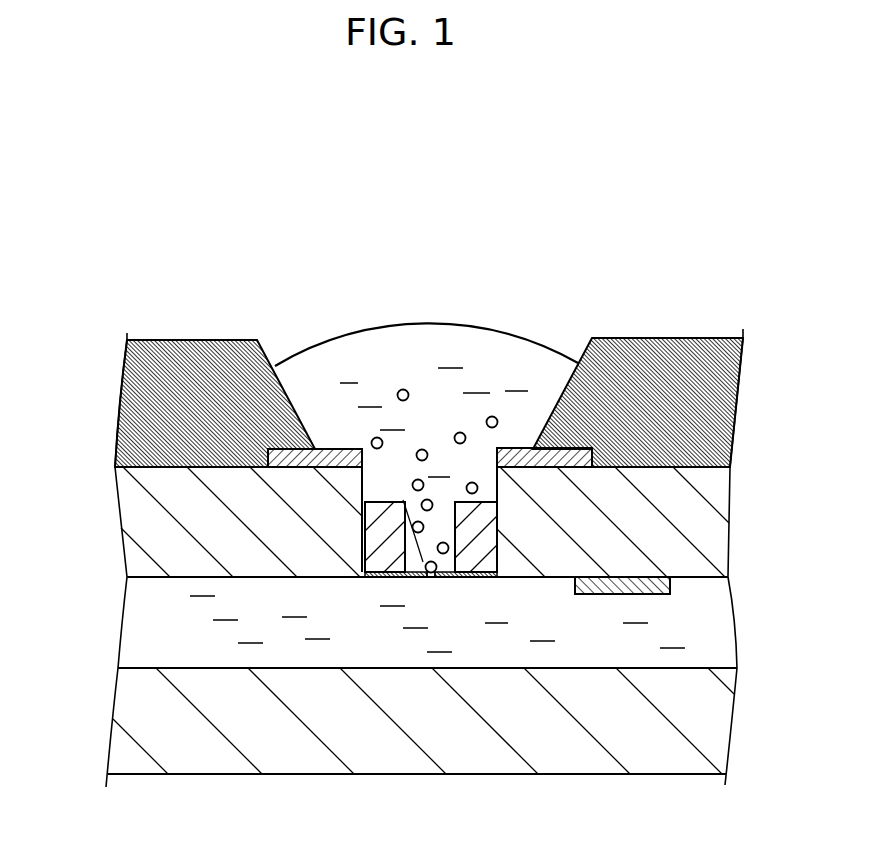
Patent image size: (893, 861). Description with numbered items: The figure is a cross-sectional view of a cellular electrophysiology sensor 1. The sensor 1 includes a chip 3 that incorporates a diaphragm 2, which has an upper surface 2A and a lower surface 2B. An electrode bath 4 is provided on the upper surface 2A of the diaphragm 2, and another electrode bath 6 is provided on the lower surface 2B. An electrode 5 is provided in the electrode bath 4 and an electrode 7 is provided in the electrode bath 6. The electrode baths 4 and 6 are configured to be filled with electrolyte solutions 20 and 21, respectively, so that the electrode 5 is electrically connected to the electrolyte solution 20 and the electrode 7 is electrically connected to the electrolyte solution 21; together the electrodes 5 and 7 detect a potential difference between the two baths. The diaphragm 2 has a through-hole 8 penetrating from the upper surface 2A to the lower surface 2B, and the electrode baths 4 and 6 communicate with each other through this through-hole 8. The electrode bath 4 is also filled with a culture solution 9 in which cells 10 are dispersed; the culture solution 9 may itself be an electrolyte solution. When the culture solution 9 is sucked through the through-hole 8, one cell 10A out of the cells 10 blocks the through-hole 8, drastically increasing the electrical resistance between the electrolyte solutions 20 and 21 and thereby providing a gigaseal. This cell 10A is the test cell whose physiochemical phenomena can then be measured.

The cellular electrophysiology sensor 1 is at (593, 272).
The diaphragm 2 is at (390, 577).
The upper surface 2A is at (403, 500).
The lower surface 2B is at (407, 577).
The chip 3 is at (483, 548).
The electrode bath 4 is at (330, 412).
The electrode 5 is at (573, 455).
The electrode bath 6 is at (140, 603).
The electrode 7 is at (657, 573).
The through-hole 8 is at (432, 577).
The culture solution 9 is at (323, 365).
The cells 10 is at (492, 416).
The cell 10A is at (428, 568).
The electrolyte solution 20 is at (347, 365).
The electrolyte solution 21 is at (140, 632).